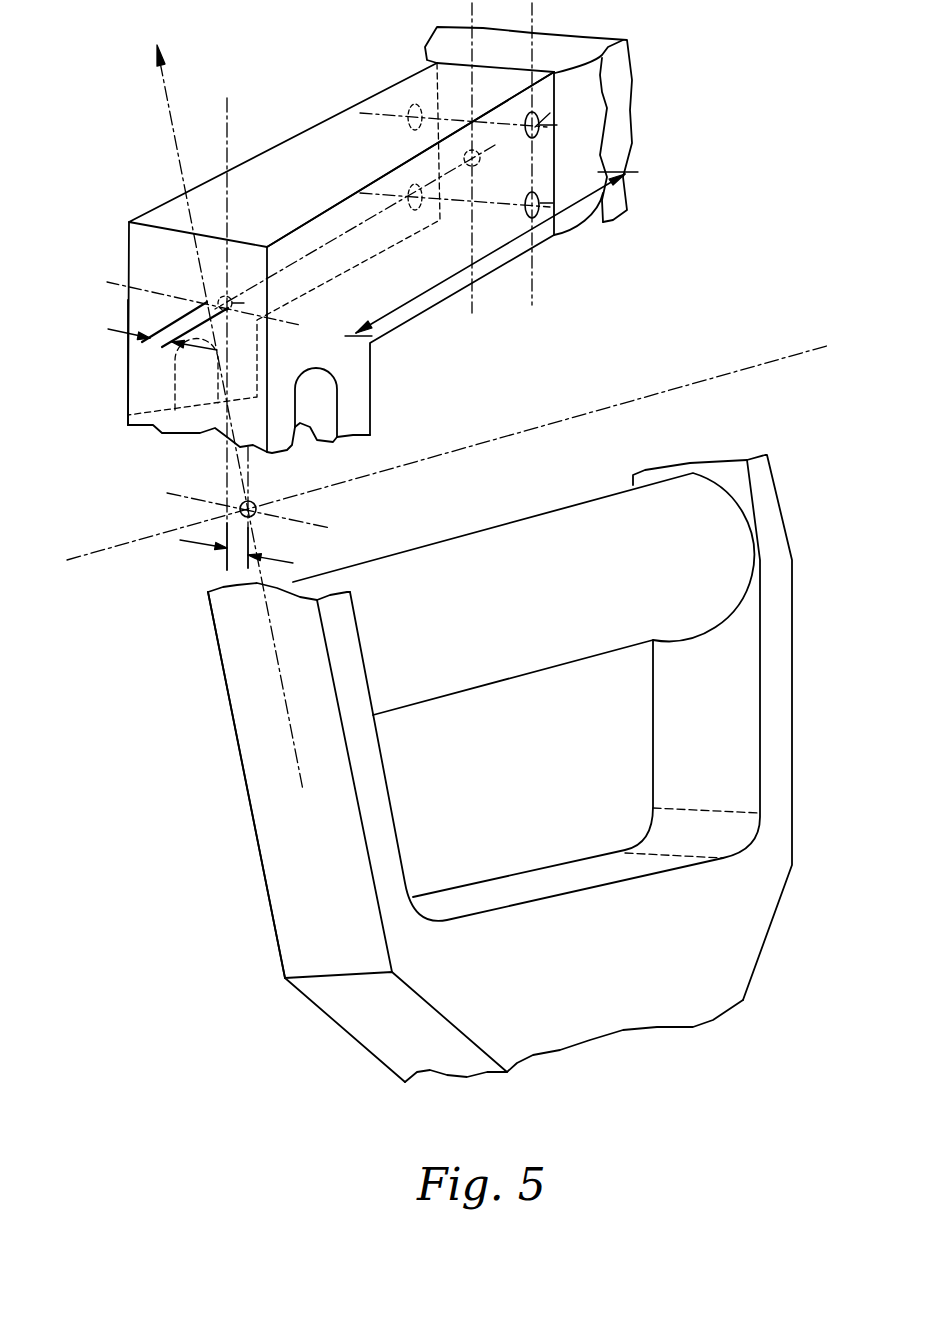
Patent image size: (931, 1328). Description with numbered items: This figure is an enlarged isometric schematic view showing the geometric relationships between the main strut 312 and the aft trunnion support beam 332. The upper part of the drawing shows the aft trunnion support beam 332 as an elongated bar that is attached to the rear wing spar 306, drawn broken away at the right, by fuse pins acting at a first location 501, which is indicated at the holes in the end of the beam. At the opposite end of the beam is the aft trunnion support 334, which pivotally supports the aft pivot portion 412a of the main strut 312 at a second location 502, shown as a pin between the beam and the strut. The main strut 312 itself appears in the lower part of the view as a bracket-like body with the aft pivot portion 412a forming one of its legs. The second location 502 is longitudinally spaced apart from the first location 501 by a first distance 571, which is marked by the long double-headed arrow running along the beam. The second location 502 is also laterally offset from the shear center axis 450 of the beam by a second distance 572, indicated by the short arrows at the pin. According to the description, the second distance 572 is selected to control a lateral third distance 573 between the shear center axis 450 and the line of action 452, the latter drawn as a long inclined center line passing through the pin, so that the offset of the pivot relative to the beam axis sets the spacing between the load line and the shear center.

The rear wing spar 306 is at (583, 217).
The aft trunnion support beam 332 is at (373, 97).
The shear center axis 450 is at (367, 222).
The first location 501 is at (540, 202).
The first distance 571 is at (420, 296).
The third distance 573 is at (108, 330).
The aft trunnion support 334 is at (137, 384).
The line of action 452 is at (168, 113).
The second location 502 is at (247, 508).
The second distance 572 is at (200, 543).
The main strut 312 is at (713, 943).
The aft pivot portion 412a is at (223, 687).